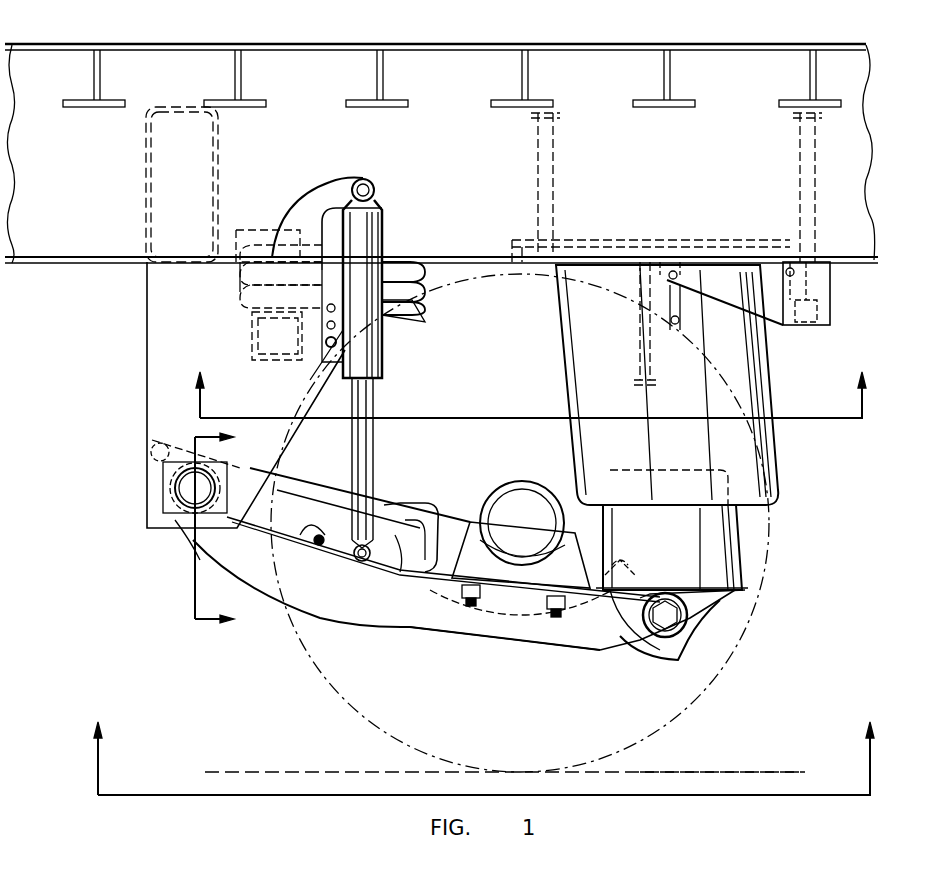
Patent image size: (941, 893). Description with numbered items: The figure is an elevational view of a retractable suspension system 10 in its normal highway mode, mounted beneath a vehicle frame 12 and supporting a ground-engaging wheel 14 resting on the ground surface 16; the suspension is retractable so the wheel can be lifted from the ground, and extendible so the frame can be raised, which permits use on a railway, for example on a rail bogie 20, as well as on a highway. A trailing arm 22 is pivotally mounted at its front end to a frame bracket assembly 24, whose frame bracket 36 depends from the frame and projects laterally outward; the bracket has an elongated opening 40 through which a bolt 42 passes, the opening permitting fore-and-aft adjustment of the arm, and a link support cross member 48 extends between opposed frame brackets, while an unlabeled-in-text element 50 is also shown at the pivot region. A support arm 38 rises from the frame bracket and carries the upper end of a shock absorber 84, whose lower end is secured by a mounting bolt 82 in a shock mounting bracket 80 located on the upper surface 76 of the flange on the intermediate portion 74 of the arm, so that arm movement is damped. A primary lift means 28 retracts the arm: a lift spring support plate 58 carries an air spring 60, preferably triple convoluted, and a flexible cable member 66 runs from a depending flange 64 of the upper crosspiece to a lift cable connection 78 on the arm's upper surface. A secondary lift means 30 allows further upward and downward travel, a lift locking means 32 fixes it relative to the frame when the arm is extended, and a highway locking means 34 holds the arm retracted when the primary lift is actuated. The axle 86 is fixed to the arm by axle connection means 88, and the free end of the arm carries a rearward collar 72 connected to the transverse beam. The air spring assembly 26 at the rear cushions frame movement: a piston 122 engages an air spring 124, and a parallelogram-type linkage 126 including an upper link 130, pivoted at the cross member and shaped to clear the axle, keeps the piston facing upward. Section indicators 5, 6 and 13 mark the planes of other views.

The suspension system 10 is at (134, 626).
The frame 12 is at (578, 95).
The ground-engaging wheels 14 is at (383, 732).
The ground surface 16 is at (752, 766).
The rail bogie 20 is at (240, 520).
The trailing arm 22 is at (318, 617).
The frame bracket assembly 24 is at (126, 414).
The air spring assembly 26 is at (778, 348).
The primary lift means 28 is at (426, 326).
The secondary lift means 30 is at (835, 192).
The lift locking means 32 is at (818, 272).
The highway locking means 34 is at (698, 648).
The frame bracket 36 is at (170, 336).
The support arm 38 is at (330, 186).
The elongated opening 40 is at (166, 480).
The bolt 42 is at (190, 513).
The link support cross member 48 is at (150, 446).
The pivot plate 50 is at (156, 473).
The lift spring support plate 58 is at (420, 308).
The air spring 60 is at (420, 284).
The flange 64 is at (318, 322).
The flexible cable member 66 is at (352, 468).
The rearward collar 72 is at (624, 640).
The intermediate portion 74 is at (433, 617).
The upper surface 76 is at (402, 508).
The lift cable connection 78 is at (288, 533).
The shock mounting bracket 80 is at (405, 573).
The mounting bolt 82 is at (352, 562).
The shock absorber 84 is at (372, 416).
The axle 86 is at (500, 572).
The axle connection means 88 is at (488, 492).
The piston 122 is at (712, 548).
The air spring 124 is at (745, 452).
The parallelogram-type linkage 126 is at (648, 566).
The upper link 130 is at (384, 507).
The section line 5 is at (479, 758).
The section line 6 is at (530, 379).
The section line 13 is at (232, 528).